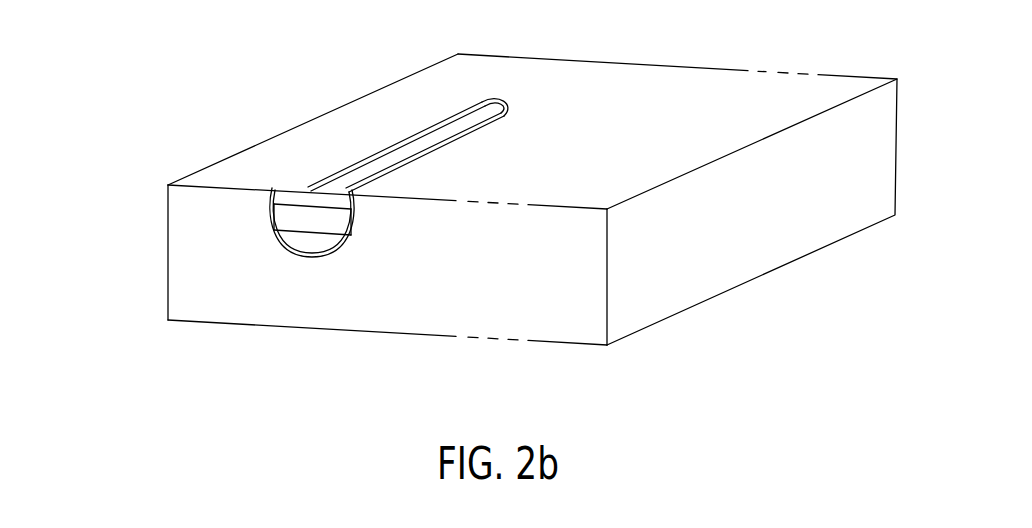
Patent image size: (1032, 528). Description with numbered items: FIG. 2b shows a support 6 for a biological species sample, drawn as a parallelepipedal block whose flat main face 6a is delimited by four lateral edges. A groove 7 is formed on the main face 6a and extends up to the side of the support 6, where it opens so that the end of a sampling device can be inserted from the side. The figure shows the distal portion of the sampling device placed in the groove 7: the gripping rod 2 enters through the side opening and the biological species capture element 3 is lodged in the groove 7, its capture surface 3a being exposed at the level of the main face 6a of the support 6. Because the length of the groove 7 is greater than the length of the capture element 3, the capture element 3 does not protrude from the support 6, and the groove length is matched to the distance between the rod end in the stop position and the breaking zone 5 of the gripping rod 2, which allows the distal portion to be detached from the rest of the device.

The support 6 is at (128, 276).
The flat main face 6a is at (333, 124).
The groove 7 is at (420, 129).
The capture surface 3a is at (465, 112).
The biological species capture element 3 is at (301, 180).
The gripping rod 2 is at (295, 237).
The breaking zone 5 is at (315, 216).